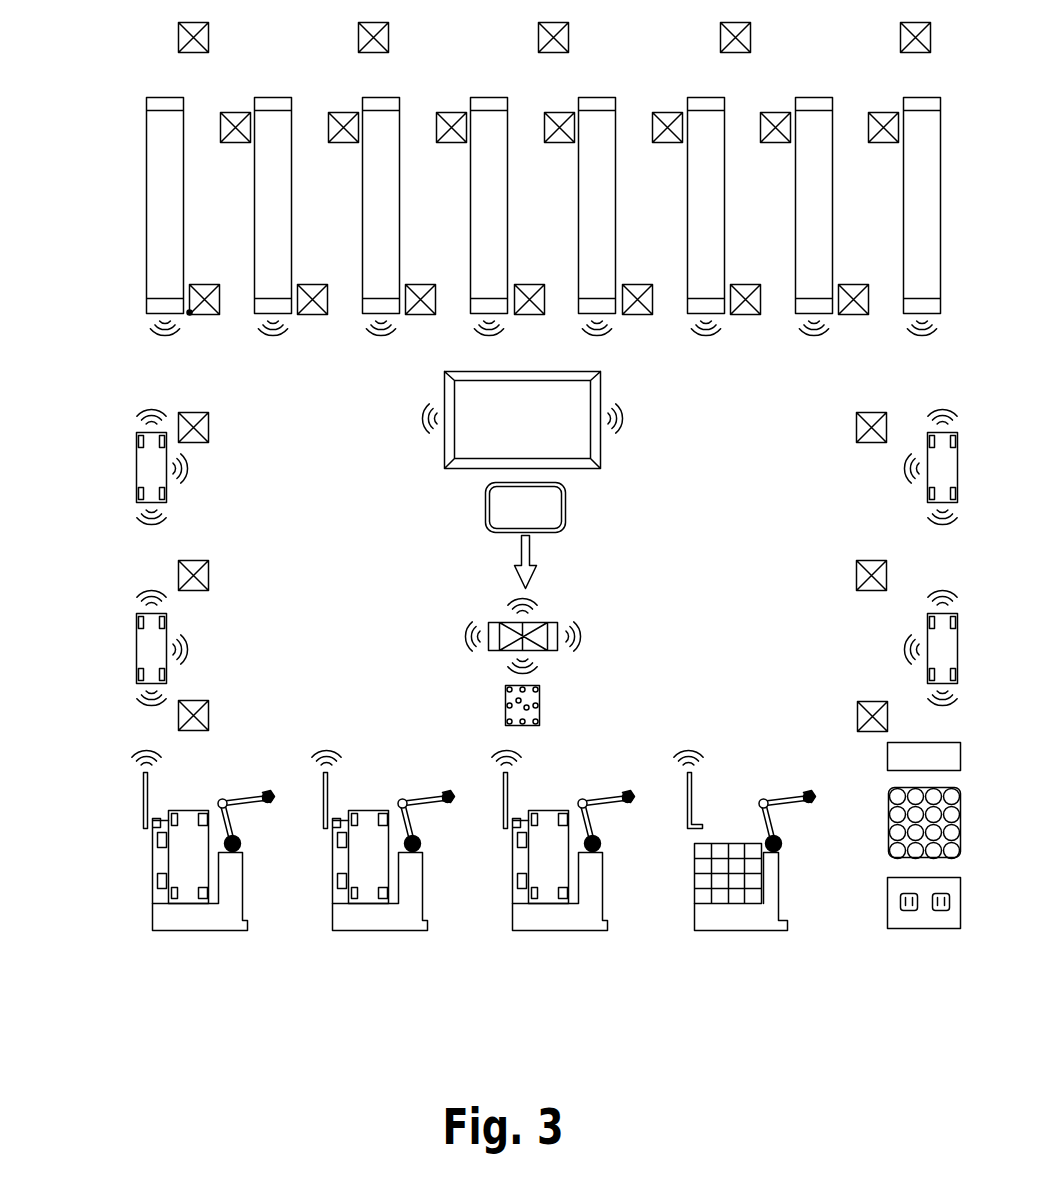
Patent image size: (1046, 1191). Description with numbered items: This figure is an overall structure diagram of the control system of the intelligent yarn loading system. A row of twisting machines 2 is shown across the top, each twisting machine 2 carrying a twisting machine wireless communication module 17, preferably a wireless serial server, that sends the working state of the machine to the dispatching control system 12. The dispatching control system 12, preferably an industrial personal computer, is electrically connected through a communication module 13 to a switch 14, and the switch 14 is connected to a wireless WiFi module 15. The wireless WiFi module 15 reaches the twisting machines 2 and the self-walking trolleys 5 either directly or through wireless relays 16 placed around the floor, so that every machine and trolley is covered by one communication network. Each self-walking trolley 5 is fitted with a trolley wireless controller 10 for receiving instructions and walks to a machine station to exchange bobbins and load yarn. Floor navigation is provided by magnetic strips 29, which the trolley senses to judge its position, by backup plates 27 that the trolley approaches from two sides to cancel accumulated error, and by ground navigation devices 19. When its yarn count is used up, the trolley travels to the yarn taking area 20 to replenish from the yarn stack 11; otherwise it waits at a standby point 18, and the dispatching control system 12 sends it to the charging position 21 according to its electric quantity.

The twisting machine 2 is at (158, 209).
The magnetic strip 29 is at (192, 310).
The backup plate 27 is at (190, 312).
The dispatching control system 12 is at (473, 393).
The communication module 13 is at (512, 497).
The switch 14 is at (517, 628).
The wireless WiFi module 15 is at (522, 700).
The wireless relay 16 is at (165, 629).
The trolley wireless controller 10 is at (168, 812).
The self-walking trolley 5 is at (200, 808).
The yarn stack 11 is at (702, 853).
The twisting machine wireless communication module 17 is at (917, 306).
The standby point 18 is at (937, 750).
The navigation device 19 is at (857, 703).
The yarn taking area 20 is at (897, 790).
The charging position 21 is at (902, 885).